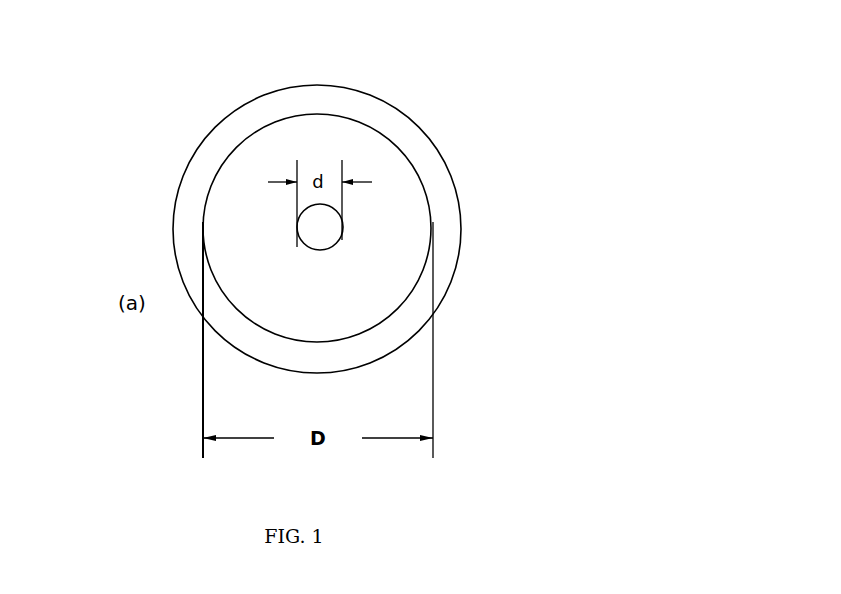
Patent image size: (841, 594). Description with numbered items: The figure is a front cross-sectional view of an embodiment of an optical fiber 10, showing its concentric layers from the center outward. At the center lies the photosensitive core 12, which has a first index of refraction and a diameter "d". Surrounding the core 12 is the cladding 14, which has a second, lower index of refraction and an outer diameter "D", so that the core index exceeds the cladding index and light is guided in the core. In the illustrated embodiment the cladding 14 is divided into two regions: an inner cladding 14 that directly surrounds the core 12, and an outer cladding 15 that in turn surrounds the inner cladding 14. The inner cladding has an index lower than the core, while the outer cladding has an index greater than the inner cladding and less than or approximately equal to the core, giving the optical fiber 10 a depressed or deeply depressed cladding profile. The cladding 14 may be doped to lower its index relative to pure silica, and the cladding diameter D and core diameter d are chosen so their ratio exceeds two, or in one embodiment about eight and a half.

The optical fiber 10 is at (140, 181).
The photosensitive core 12 is at (323, 242).
The cladding 14 is at (380, 157).
The outer cladding 15 is at (233, 127).